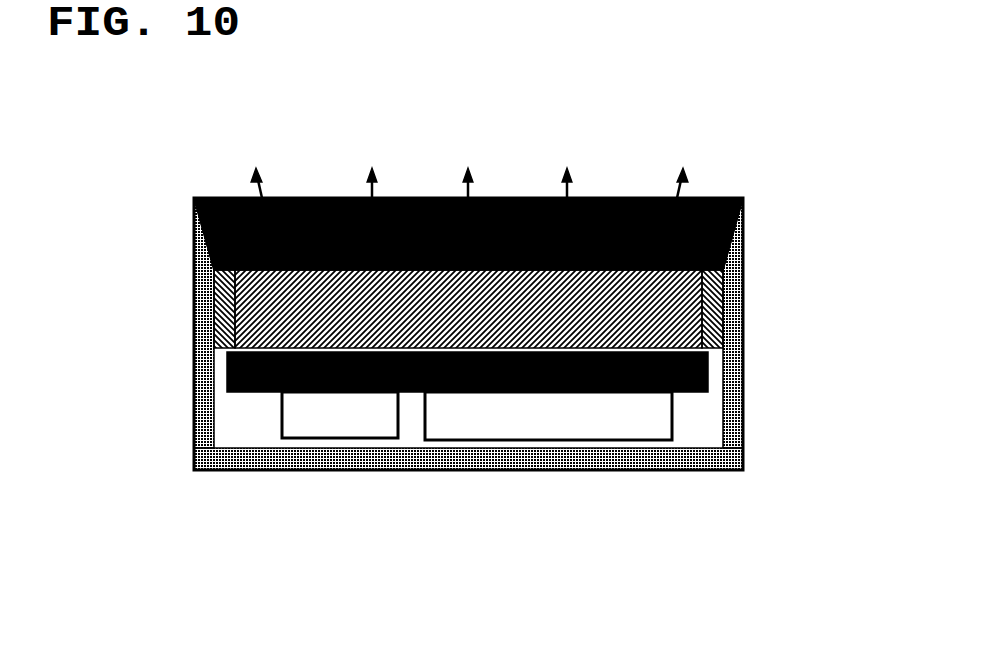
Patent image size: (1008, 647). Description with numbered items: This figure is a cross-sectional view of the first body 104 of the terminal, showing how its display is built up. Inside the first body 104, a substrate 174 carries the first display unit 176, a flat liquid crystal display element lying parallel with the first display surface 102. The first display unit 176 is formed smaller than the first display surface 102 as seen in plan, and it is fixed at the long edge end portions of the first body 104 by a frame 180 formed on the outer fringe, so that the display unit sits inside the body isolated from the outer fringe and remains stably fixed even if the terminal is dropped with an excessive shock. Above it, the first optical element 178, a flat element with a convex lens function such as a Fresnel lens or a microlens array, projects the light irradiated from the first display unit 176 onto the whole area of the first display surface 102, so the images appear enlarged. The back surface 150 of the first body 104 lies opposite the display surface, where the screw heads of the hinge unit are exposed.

The first display surface 102 is at (612, 198).
The first body 104 is at (743, 450).
The back surface 150 is at (583, 471).
The substrate 174 is at (258, 392).
The first display unit 176 is at (423, 318).
The first optical element 178 is at (423, 198).
The frame 180 is at (196, 290).